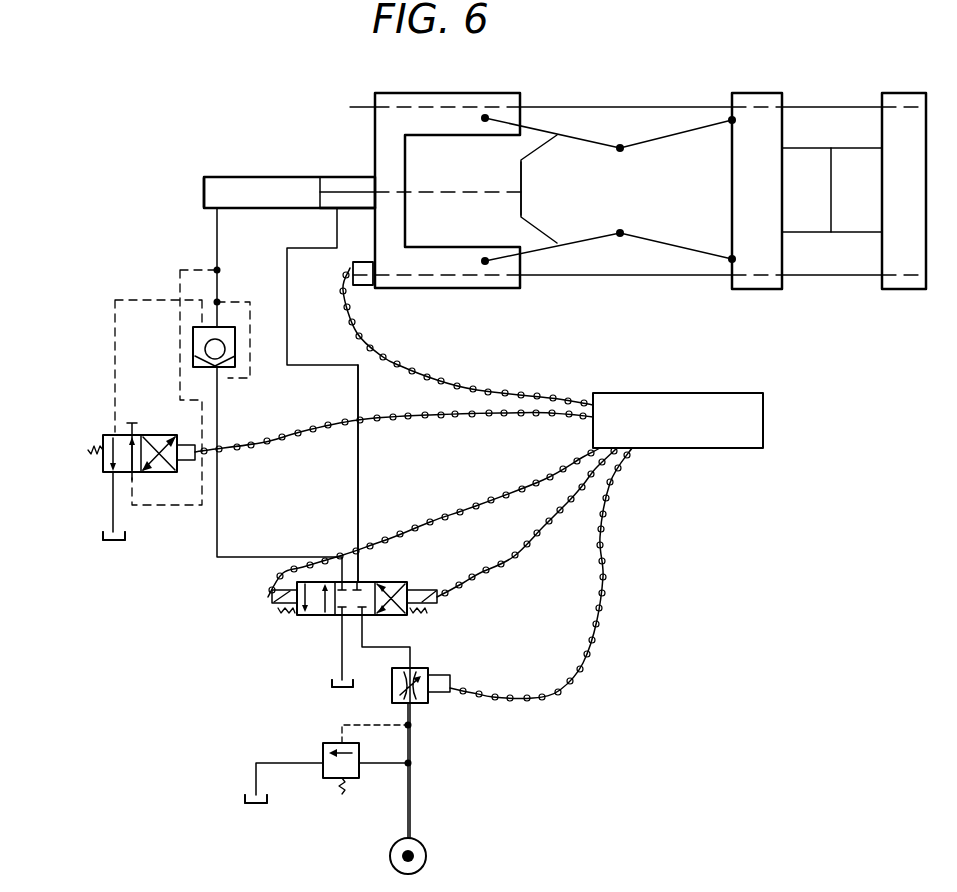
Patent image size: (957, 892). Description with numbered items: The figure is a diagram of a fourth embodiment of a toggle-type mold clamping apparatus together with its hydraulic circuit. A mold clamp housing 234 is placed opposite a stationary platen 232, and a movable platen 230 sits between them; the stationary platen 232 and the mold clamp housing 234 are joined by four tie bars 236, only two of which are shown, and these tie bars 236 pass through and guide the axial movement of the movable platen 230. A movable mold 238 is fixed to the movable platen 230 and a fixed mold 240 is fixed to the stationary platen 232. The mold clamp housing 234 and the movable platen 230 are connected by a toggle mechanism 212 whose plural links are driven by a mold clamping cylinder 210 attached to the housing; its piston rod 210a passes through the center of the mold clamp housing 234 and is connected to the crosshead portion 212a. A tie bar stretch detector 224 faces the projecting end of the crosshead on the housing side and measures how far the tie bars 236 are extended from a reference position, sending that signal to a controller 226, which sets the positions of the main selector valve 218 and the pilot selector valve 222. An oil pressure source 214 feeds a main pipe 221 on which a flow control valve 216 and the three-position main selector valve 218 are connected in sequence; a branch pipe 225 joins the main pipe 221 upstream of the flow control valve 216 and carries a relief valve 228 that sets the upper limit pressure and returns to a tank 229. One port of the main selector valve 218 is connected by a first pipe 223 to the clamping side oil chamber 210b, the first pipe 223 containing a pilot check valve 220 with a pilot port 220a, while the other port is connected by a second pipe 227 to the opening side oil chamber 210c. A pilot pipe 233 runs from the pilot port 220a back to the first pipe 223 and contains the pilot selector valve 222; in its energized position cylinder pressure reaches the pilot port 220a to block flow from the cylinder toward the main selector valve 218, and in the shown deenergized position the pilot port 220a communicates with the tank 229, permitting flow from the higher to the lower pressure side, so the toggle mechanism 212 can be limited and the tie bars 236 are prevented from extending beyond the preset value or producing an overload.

The mold clamping cylinder 210 is at (238, 177).
The piston rod 210a is at (330, 209).
The clamping side oil chamber 210b is at (204, 197).
The opening side oil chamber 210c is at (342, 184).
The toggle mechanism 212 is at (574, 151).
The crosshead portion 212a is at (520, 209).
The oil pressure source 214 is at (428, 853).
The flow control valve 216 is at (423, 703).
The main selector valve 218 is at (397, 615).
The pilot check valve 220 is at (193, 356).
The pilot port 220a is at (180, 326).
The main pipe 221 is at (410, 655).
The pilot selector valve 222 is at (103, 437).
The first pipe 223 is at (217, 247).
The tie bar stretch detector 224 is at (350, 293).
The branch pipe 225 is at (382, 765).
The controller 226 is at (737, 392).
The second pipe 227 is at (358, 470).
The relief valve 228 is at (322, 770).
The tank 229 is at (243, 797).
The movable platen 230 is at (763, 82).
The stationary platen 232 is at (905, 93).
The pilot pipe 233 is at (124, 300).
The mold clamp housing 234 is at (481, 93).
The tie bars 236 is at (652, 300).
The movable mold 238 is at (805, 233).
The fixed mold 240 is at (860, 233).